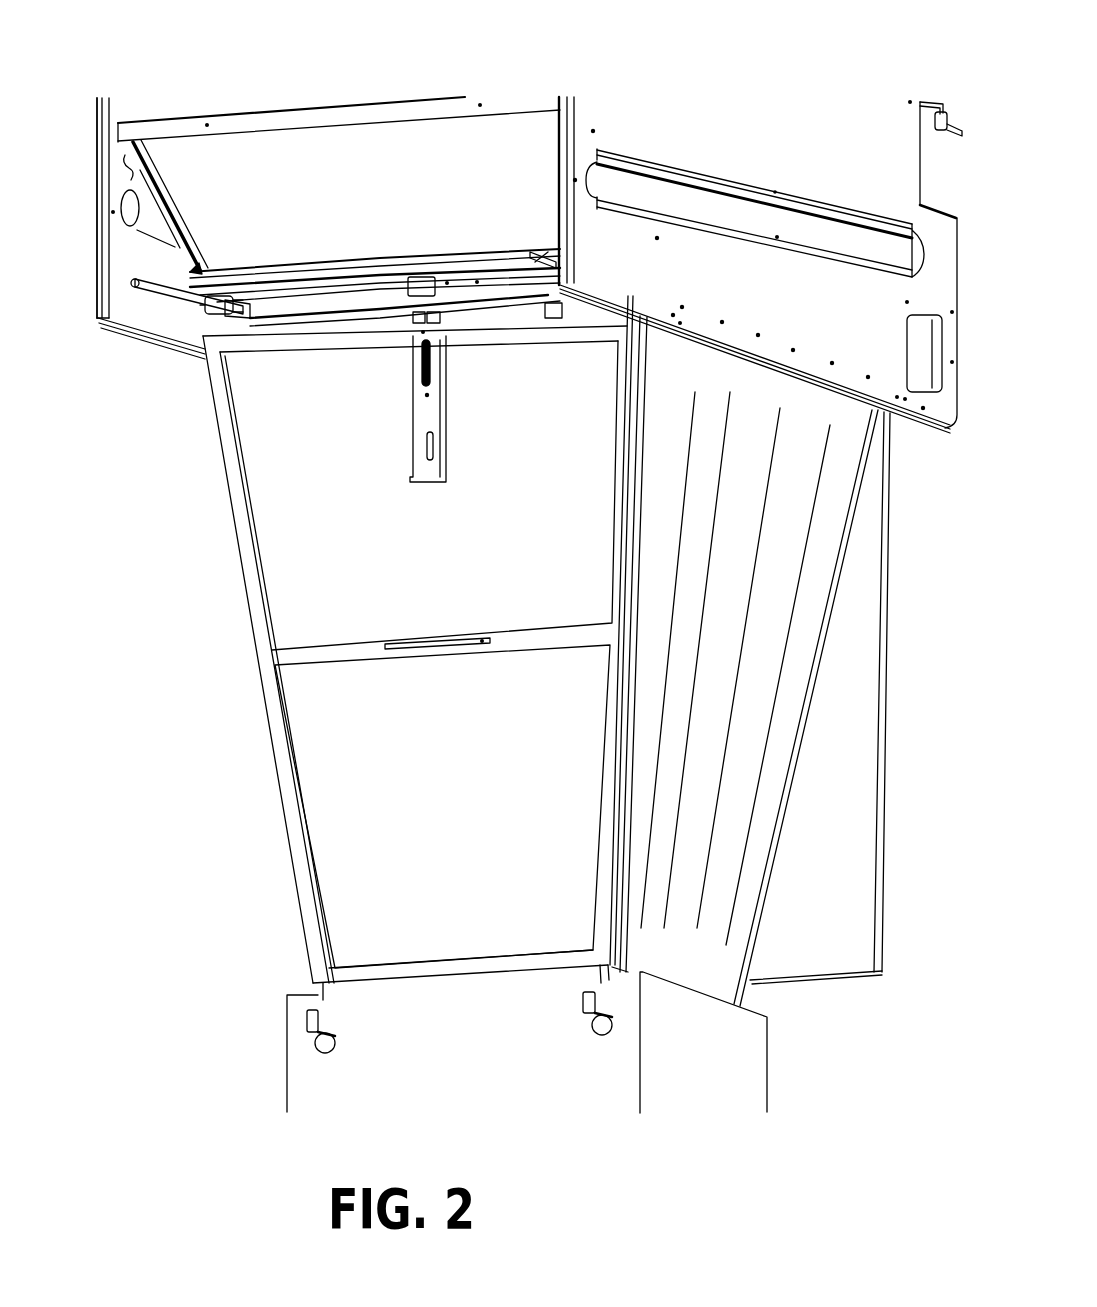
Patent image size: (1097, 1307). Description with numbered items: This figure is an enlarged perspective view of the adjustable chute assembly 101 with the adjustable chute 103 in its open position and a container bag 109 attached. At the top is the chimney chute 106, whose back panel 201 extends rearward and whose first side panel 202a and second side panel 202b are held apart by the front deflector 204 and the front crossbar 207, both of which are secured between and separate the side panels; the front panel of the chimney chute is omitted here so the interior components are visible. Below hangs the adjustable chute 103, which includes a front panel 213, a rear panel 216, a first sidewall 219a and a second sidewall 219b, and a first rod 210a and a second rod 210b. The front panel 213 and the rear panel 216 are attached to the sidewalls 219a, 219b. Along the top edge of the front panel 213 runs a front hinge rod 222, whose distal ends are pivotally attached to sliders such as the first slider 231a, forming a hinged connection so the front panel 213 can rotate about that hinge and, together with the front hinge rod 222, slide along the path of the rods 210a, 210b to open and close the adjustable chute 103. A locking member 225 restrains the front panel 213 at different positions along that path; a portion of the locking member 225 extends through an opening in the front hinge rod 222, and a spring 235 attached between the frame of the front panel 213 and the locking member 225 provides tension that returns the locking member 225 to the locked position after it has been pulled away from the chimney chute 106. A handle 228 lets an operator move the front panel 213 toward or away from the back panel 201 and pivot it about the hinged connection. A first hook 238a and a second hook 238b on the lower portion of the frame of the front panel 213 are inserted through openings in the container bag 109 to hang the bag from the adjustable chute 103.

The adjustable chute assembly 101 is at (690, 47).
The adjustable chute 103 is at (364, 648).
The chimney chute 106 is at (307, 235).
The container bag 109 is at (486, 1040).
The back panel 201 is at (882, 754).
The first side panel 202a is at (110, 173).
The second side panel 202b is at (560, 160).
The front deflector 204 is at (168, 126).
The front crossbar 207 is at (327, 271).
The first rod 210a is at (134, 290).
The second rod 210b is at (548, 253).
The front panel 213 is at (391, 648).
The rear panel 216 is at (755, 661).
The first sidewall 219a is at (204, 500).
The second sidewall 219b is at (773, 805).
The front hinge rod 222 is at (346, 314).
The locking member 225 is at (396, 406).
The handle 228 is at (385, 648).
The first slider 231a is at (232, 296).
The spring 235 is at (420, 370).
The first hook 238a is at (305, 1015).
The second hook 238b is at (581, 1000).